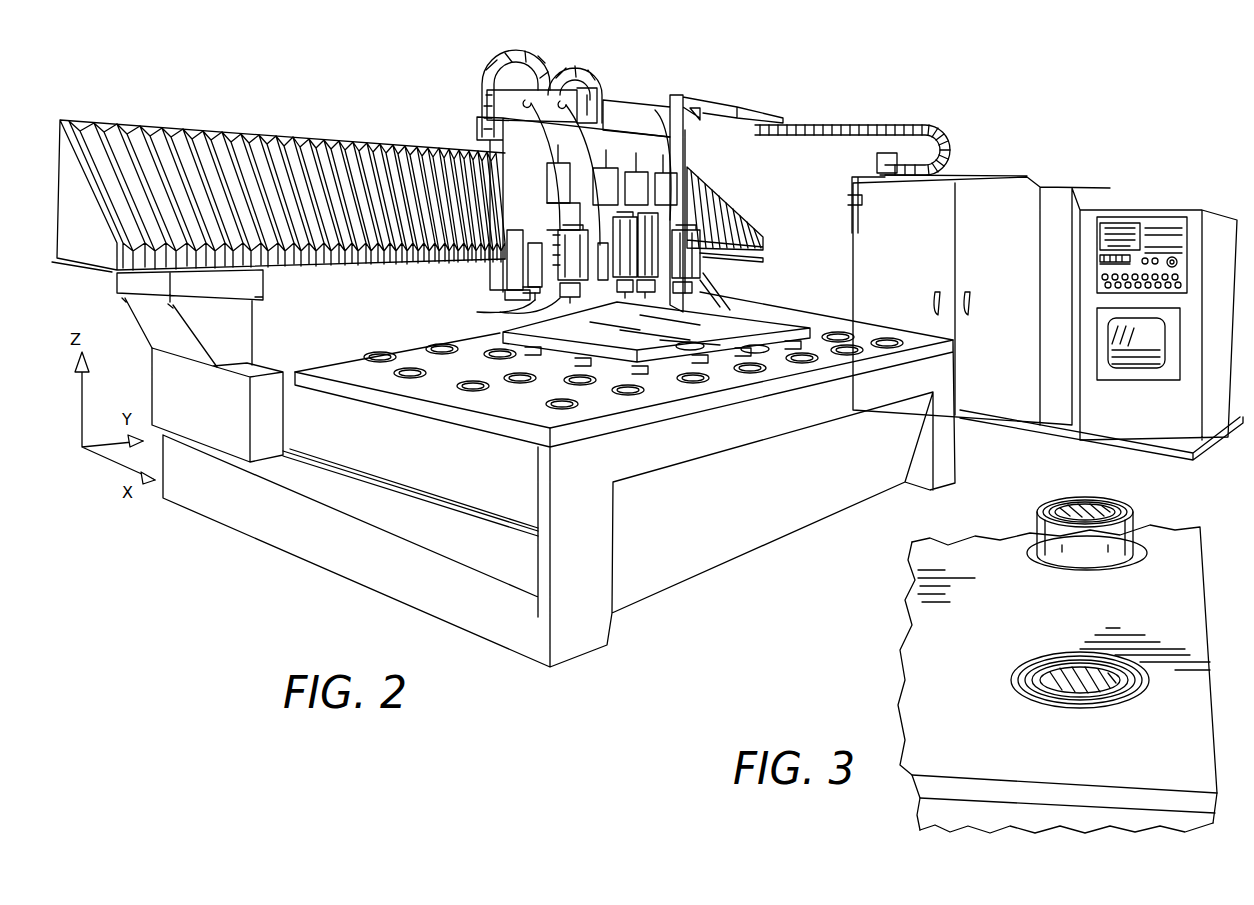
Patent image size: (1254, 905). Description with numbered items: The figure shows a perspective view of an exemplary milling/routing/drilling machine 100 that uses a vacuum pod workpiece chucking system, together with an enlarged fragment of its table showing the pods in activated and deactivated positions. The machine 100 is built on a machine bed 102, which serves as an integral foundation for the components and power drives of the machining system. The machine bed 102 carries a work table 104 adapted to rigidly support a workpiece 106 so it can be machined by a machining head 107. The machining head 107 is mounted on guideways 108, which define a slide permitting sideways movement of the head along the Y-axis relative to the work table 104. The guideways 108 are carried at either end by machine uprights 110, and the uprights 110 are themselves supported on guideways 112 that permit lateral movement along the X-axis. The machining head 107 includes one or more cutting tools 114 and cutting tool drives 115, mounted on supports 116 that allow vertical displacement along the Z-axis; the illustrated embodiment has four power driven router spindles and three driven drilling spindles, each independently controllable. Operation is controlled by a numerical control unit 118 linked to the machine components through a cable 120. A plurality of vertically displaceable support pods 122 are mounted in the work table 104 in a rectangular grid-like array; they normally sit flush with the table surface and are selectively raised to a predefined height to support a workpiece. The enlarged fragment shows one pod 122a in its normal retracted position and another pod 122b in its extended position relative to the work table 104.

In FIG. 2, the milling/routing/drilling machine 100 is at (435, 108).
In FIG. 2, the machine bed 102 is at (602, 620).
In FIG. 2, the work table 104 is at (562, 407).
In FIG. 3, the work table 104 is at (918, 605).
In FIG. 2, the workpiece 106 is at (753, 330).
In FIG. 2, the machining head 107 is at (609, 92).
In FIG. 2, the guideways 108 is at (155, 120).
In FIG. 2, the machine uprights 110 is at (248, 313).
In FIG. 2, the guideways 112 is at (325, 452).
In FIG. 2, the cutting tools 114 is at (533, 307).
In FIG. 2, the cutting tool drives 115 is at (657, 231).
In FIG. 2, the supports 116 is at (513, 283).
In FIG. 2, the numerical control unit 118 is at (1107, 180).
In FIG. 2, the cable 120 is at (848, 124).
In FIG. 2, the support pods 122 is at (713, 369).
In FIG. 3, the pod 122a is at (1045, 660).
In FIG. 3, the pod 122b is at (1117, 500).